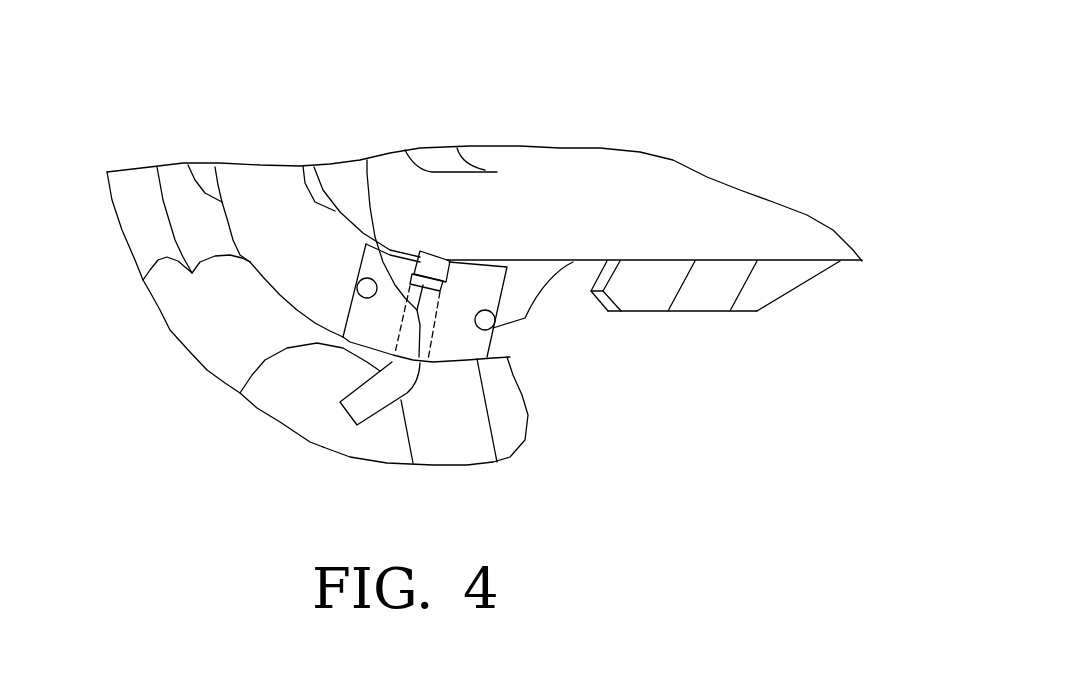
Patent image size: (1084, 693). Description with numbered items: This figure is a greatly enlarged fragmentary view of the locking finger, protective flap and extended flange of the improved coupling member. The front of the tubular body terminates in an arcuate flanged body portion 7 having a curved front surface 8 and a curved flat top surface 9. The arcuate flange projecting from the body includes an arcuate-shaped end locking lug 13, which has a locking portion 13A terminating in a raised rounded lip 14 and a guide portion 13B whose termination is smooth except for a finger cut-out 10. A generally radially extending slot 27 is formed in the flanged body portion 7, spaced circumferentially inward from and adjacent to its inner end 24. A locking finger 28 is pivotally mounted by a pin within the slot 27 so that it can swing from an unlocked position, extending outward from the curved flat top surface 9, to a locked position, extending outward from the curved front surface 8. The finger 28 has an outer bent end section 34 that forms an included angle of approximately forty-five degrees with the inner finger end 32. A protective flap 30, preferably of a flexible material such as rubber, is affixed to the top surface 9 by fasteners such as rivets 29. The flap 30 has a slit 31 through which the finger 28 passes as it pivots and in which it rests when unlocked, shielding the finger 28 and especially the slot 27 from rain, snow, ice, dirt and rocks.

The arcuate flanged body portion 7 is at (484, 182).
The curved front surface 8 is at (202, 130).
The curved flat top surface 9 is at (234, 172).
The finger cut-out 10 is at (366, 418).
The end locking lug 13 is at (131, 290).
The locking portion 13A is at (133, 217).
The guide portion 13B is at (198, 345).
The raised rounded lip 14 is at (155, 155).
The inner end 24 is at (361, 165).
The slot 27 is at (463, 216).
The locking finger 28 is at (420, 405).
The rivets 29 is at (493, 323).
The protective flap 30 is at (523, 224).
The slit 31 is at (394, 191).
The inner finger end 32 is at (426, 218).
The outer bent end section 34 is at (357, 405).